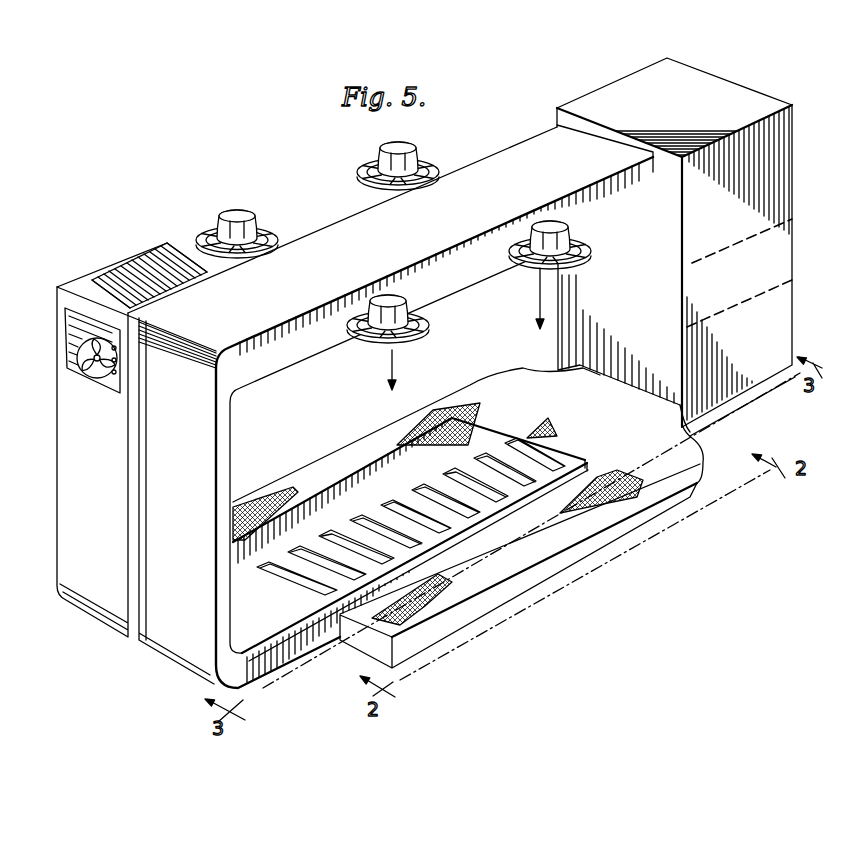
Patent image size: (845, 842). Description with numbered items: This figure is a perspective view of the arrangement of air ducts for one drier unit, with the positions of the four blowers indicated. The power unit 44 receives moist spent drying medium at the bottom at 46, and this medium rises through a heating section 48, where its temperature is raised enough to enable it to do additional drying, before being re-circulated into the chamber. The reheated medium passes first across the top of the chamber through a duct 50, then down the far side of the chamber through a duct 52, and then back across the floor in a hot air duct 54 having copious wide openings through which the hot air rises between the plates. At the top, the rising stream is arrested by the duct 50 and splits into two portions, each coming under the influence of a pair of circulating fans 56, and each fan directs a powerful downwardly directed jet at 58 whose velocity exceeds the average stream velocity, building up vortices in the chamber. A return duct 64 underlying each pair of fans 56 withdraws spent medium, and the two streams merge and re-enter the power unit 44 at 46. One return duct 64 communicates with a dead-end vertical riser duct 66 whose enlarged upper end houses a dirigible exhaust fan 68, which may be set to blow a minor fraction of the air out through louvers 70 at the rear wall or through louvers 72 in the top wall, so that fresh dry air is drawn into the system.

The power unit 44 is at (760, 83).
The intake of the power unit 46 is at (643, 397).
The heating section 48 is at (783, 262).
The duct 50 is at (328, 248).
The duct 52 is at (173, 605).
The hot air duct 54 is at (300, 642).
The circulating fan 56 is at (242, 214).
The downwardly directed jet 58 is at (388, 362).
The return duct 64 is at (302, 474).
The vertical riser duct 66 is at (72, 453).
The dirigible exhaust fan 68 is at (100, 370).
The louvers 70 is at (70, 366).
The louvers 72 is at (100, 285).